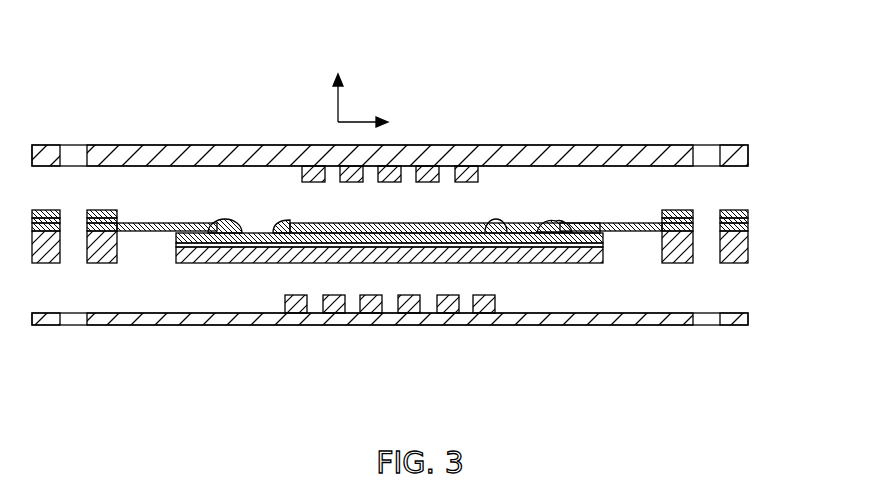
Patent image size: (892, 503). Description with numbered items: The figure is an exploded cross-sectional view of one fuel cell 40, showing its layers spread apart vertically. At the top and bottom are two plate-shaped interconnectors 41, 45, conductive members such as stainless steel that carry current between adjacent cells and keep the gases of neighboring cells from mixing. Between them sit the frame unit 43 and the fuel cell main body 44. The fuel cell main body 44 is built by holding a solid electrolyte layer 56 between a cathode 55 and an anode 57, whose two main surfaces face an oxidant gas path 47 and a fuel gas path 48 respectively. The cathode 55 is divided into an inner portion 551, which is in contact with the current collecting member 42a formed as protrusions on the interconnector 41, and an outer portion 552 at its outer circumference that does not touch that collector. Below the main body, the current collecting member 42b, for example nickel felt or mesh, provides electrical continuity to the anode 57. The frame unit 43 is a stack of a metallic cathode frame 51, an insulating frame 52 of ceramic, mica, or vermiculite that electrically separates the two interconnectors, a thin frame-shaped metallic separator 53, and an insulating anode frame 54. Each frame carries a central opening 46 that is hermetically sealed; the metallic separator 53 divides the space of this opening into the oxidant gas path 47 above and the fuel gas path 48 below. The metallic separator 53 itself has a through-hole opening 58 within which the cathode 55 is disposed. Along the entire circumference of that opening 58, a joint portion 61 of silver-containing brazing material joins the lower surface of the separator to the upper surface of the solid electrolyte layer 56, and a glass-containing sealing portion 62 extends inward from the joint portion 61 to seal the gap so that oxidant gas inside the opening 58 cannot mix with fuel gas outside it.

The fuel cell 40 is at (144, 104).
The interconnector 41 is at (749, 157).
The current collecting member 42a is at (301, 172).
The current collecting member 42b is at (284, 306).
The frame unit 43 is at (430, 229).
The fuel cell main body 44 is at (389, 299).
The interconnector 45 is at (749, 320).
The opening 46 is at (660, 213).
The oxidant gas path 47 is at (175, 206).
The fuel gas path 48 is at (220, 287).
The cathode frame 51 is at (751, 212).
The insulating frame 52 is at (751, 221).
The metallic separator 53 is at (751, 228).
The anode frame 54 is at (412, 248).
The cathode 55 is at (389, 275).
The solid electrolyte layer 56 is at (448, 245).
The anode 57 is at (420, 255).
The inner portion 551 is at (400, 224).
The outer portion 552 is at (284, 220).
The opening 58 is at (543, 222).
The joint portion 61 is at (194, 237).
The sealing portion 62 is at (230, 220).